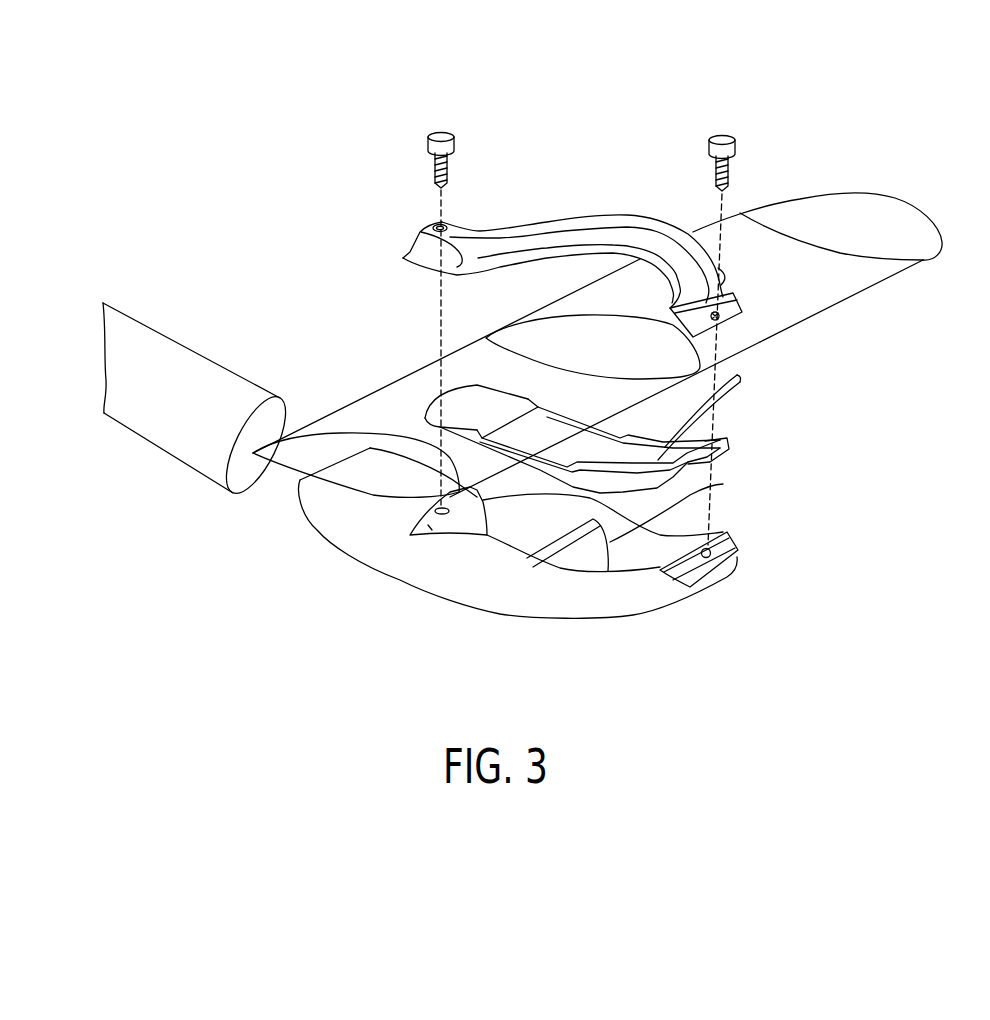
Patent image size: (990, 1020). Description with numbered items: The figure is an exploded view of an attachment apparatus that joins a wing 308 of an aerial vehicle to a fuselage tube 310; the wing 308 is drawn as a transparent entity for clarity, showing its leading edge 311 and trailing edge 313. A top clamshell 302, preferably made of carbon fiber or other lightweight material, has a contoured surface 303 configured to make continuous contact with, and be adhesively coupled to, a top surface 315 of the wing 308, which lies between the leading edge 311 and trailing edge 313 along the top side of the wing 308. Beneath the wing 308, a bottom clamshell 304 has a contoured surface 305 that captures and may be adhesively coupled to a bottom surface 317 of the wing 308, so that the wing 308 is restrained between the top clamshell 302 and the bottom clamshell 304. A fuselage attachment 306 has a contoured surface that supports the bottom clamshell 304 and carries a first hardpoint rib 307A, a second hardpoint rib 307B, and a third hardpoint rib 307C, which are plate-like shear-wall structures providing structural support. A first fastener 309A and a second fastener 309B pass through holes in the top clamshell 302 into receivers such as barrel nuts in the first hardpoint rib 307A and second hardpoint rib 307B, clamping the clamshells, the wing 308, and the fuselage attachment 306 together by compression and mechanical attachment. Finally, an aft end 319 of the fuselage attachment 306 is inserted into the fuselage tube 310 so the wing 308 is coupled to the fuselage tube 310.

The top clamshell 302 is at (574, 218).
The contoured surface 303 is at (568, 250).
The bottom clamshell 304 is at (730, 441).
The contoured surface 305 is at (738, 377).
The fuselage attachment 306 is at (728, 576).
The first hardpoint rib 307A is at (724, 546).
The second hardpoint rib 307B is at (450, 497).
The third hardpoint rib 307C is at (723, 484).
The wing 308 is at (863, 190).
The first fastener 309A is at (721, 134).
The second fastener 309B is at (441, 130).
The fuselage tube 310 is at (223, 383).
The leading edge 311 is at (818, 313).
The trailing edge 313 is at (377, 391).
The top surface 315 is at (492, 347).
The bottom surface 317 is at (773, 342).
The aft end 319 is at (302, 532).